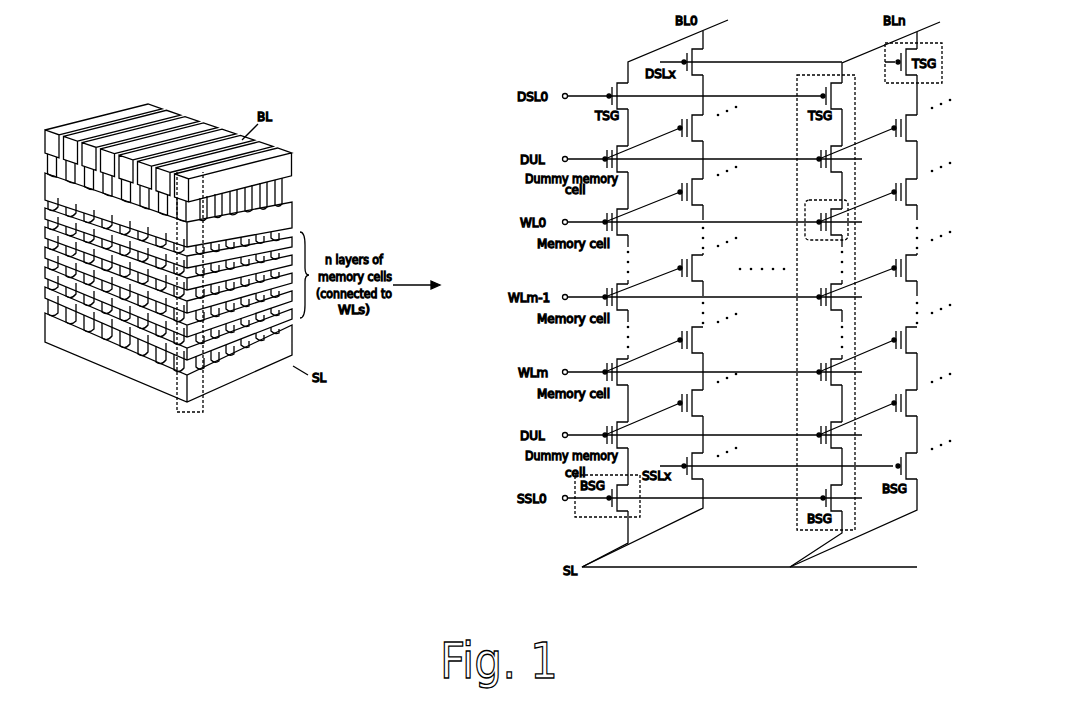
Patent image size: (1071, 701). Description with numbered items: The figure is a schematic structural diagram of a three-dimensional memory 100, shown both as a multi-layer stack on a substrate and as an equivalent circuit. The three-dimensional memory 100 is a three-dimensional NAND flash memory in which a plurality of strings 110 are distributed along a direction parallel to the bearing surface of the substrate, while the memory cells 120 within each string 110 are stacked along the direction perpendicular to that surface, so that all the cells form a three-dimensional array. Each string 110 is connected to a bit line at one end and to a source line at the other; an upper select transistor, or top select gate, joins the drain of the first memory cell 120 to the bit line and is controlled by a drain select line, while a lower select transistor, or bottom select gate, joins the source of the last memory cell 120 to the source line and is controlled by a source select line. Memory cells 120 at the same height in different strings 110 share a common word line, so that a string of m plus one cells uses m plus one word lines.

The 3D memory 100 is at (107, 96).
The string 110 is at (177, 407).
The memory cell 120 is at (836, 240).